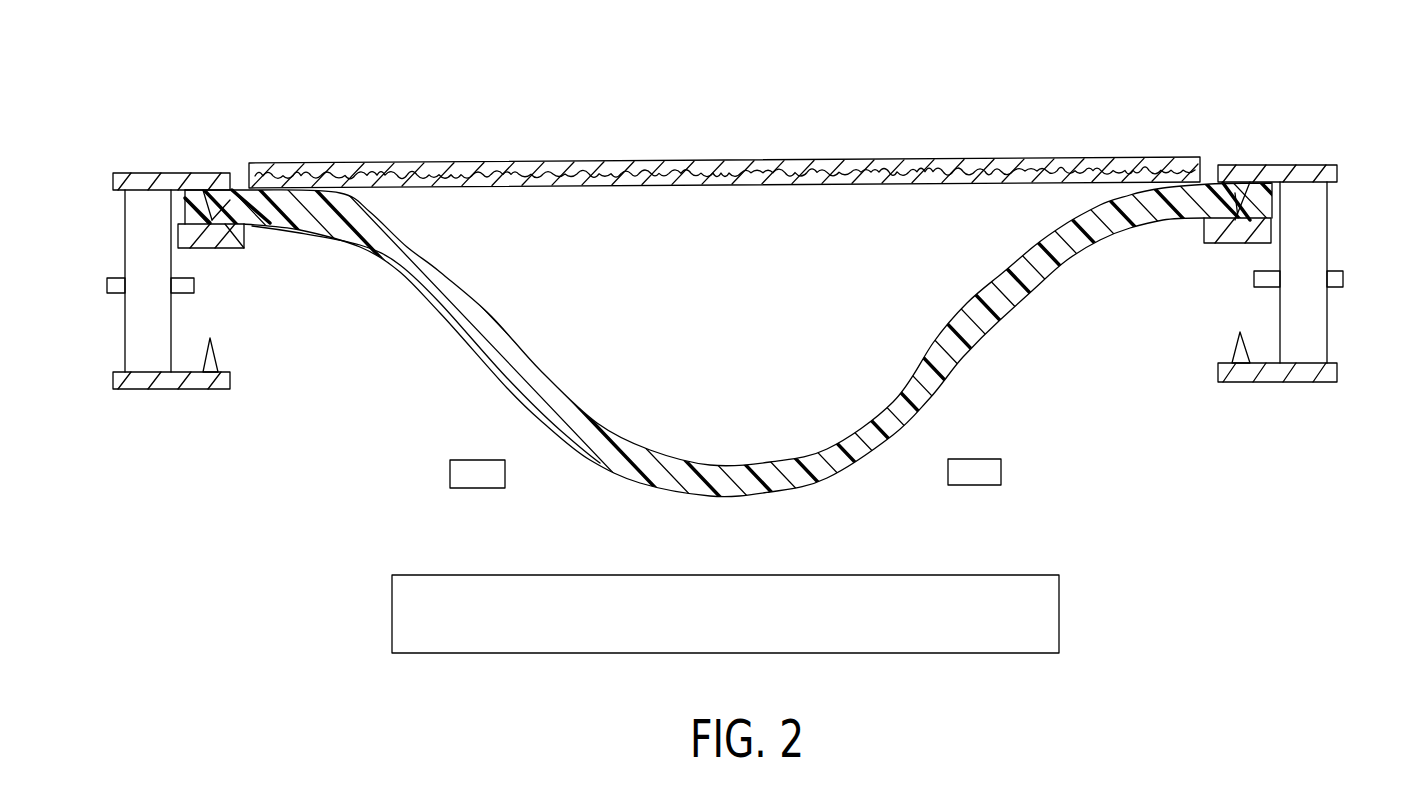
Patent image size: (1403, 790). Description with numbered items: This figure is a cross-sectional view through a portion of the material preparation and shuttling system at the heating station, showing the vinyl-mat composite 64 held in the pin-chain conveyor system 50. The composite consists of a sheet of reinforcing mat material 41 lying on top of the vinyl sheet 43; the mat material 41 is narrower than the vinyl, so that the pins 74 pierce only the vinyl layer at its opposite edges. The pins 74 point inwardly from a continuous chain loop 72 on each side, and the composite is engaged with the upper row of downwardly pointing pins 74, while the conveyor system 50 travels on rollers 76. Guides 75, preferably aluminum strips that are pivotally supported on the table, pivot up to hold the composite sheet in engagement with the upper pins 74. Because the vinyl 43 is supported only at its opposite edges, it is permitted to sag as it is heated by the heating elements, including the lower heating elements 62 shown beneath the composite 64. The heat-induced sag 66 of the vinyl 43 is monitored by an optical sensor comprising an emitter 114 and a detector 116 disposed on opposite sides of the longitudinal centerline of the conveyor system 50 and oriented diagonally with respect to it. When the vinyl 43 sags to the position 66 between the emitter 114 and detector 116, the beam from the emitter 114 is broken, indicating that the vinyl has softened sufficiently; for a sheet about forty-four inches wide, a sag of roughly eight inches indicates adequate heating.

The mat material 41 is at (538, 160).
The vinyl sheet 43 is at (487, 311).
The pin-chain conveyor system 50 is at (1293, 400).
The lower heating elements 62 is at (973, 653).
The composite 64 is at (1210, 108).
The sag 66 is at (750, 497).
The continuous chain loop 72 is at (142, 390).
The pins 74 is at (243, 248).
The guides 75 is at (207, 248).
The rollers 76 is at (171, 323).
The emitter 114 is at (473, 488).
The detector 116 is at (972, 485).